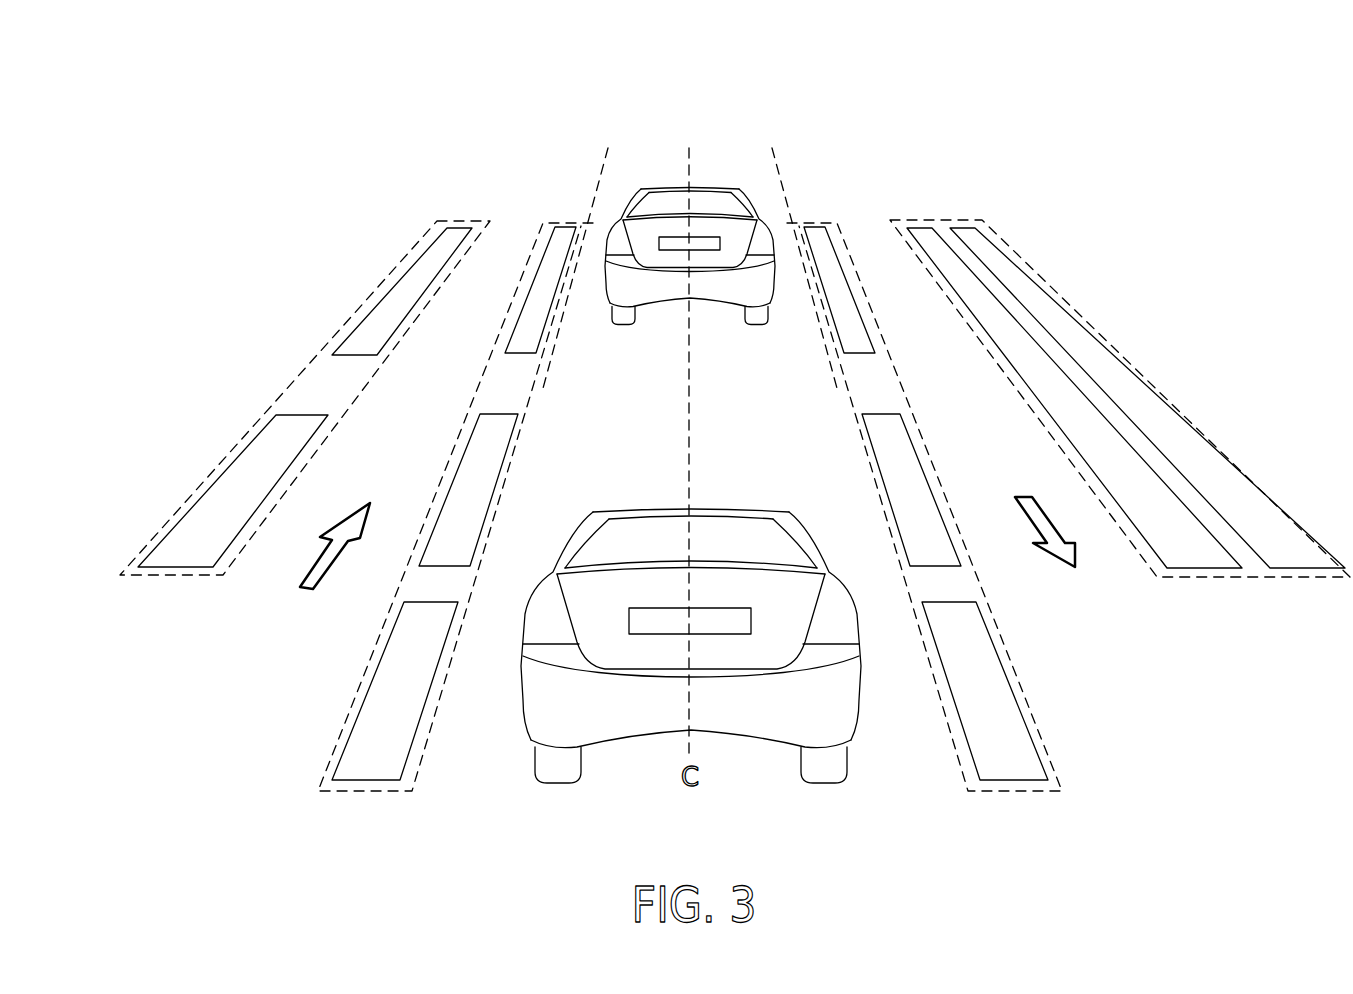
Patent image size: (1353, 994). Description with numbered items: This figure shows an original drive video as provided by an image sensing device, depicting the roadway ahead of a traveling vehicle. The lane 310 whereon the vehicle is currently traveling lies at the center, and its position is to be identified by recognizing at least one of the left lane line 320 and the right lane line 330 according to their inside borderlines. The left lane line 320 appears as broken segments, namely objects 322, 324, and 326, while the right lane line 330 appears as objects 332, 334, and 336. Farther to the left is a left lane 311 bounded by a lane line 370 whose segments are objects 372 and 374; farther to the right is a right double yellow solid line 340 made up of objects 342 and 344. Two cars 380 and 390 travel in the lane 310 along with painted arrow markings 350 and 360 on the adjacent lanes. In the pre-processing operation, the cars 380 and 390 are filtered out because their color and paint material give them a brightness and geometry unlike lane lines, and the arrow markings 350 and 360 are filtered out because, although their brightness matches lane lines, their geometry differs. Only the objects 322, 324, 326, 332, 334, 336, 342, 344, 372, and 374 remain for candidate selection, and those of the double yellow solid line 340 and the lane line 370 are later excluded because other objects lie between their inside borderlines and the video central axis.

The lane 310 is at (669, 125).
The left lane 311 is at (506, 188).
The left lane line 320 is at (545, 222).
The object 322 is at (523, 327).
The object 324 is at (478, 440).
The object 326 is at (395, 663).
The right lane line 330 is at (831, 222).
The object 332 is at (857, 328).
The object 334 is at (898, 440).
The object 336 is at (983, 663).
The right double yellow solid line 340 is at (925, 220).
The object 342 is at (923, 237).
The object 344 is at (968, 237).
The arrow marking 350 is at (1078, 560).
The arrow marking 360 is at (305, 573).
The lane line 370 is at (438, 220).
The object 372 is at (390, 302).
The object 374 is at (235, 483).
The car 380 is at (713, 177).
The car 390 is at (731, 487).